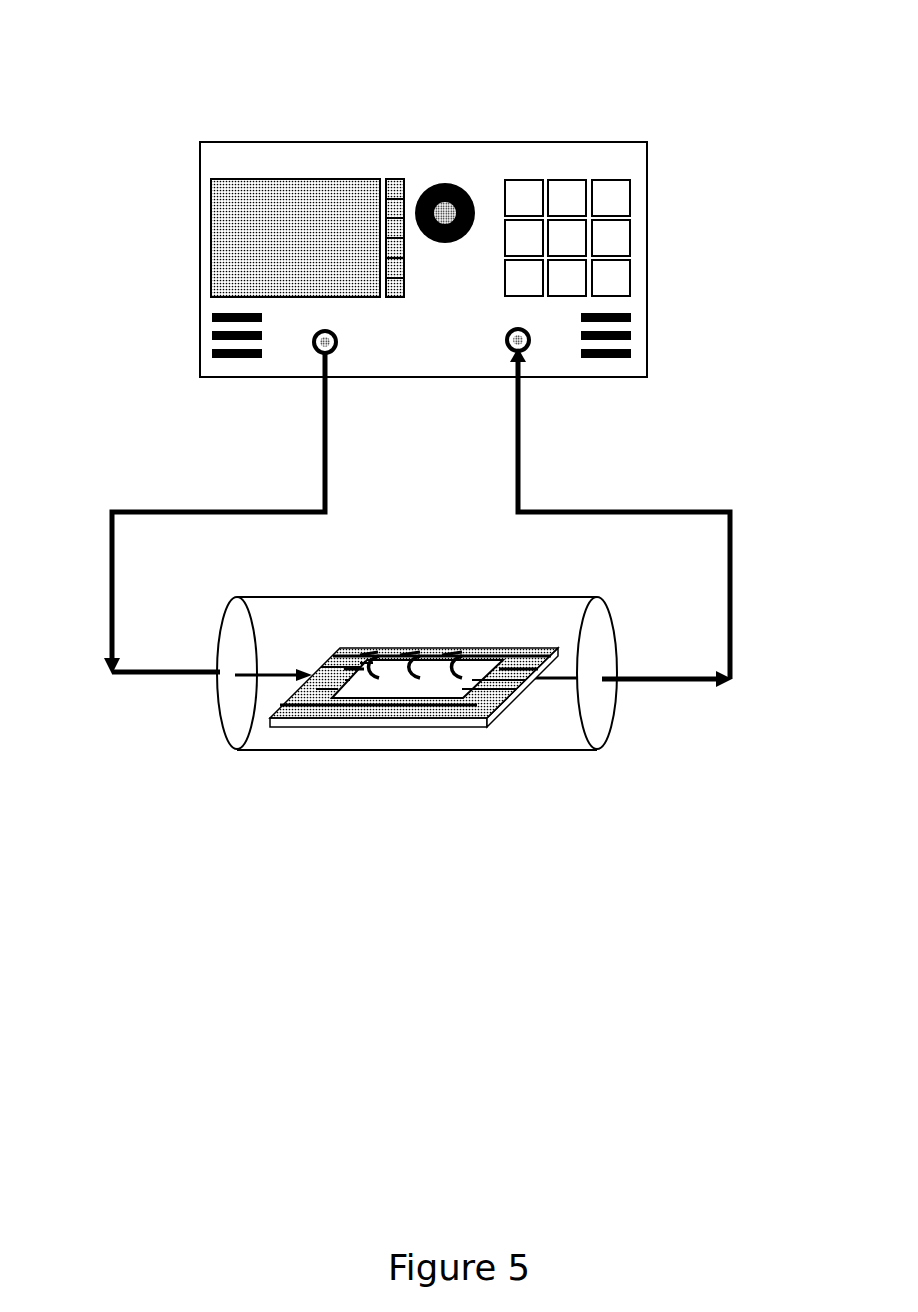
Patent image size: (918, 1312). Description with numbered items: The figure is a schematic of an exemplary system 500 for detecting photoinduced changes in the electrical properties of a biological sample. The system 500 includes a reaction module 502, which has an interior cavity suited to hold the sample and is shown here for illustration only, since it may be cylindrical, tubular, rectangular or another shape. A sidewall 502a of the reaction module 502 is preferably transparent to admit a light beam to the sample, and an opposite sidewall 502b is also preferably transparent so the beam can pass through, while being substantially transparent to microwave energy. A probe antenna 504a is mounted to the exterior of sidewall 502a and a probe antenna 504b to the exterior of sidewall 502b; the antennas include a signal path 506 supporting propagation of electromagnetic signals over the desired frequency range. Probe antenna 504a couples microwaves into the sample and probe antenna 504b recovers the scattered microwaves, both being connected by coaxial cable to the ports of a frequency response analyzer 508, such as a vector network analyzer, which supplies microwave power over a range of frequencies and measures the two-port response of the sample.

The system 500 is at (197, 50).
The reaction module 502 is at (557, 742).
The sidewall 502a is at (228, 725).
The opposite sidewall 502b is at (592, 718).
The probe antenna 504a is at (140, 676).
The probe antenna 504b is at (692, 680).
The signal path 506 is at (315, 672).
The frequency response analyzer 508 is at (610, 148).